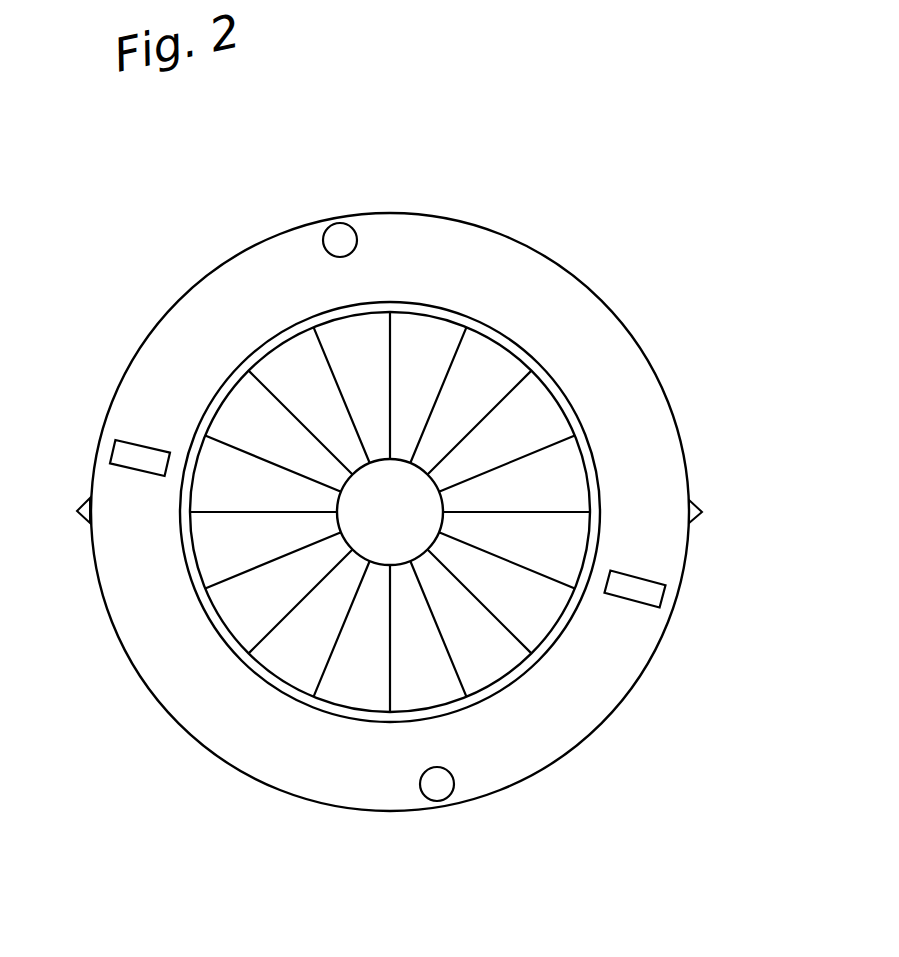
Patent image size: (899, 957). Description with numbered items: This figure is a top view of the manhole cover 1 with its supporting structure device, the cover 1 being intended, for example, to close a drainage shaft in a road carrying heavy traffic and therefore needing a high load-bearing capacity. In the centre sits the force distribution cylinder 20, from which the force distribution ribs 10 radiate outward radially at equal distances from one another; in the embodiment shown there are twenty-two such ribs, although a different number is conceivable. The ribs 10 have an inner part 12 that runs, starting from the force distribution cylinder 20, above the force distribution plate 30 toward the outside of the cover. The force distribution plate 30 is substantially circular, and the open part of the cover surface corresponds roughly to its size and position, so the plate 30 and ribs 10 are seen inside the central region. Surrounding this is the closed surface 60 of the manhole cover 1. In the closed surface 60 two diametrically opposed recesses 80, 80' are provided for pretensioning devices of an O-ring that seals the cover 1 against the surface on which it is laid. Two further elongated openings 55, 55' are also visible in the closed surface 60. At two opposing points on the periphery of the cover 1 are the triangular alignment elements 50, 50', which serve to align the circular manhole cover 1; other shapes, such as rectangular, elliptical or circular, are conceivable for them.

The manhole cover 1 is at (542, 162).
The force distribution ribs 10 is at (450, 344).
The inner part 12 is at (444, 392).
The force distribution cylinder 20 is at (363, 467).
The force distribution plate 30 is at (408, 548).
The triangular alignment element 50 is at (716, 482).
The triangular alignment element 50' is at (66, 471).
The slot 55 is at (141, 430).
The slot 55' is at (635, 553).
The closed surface 60 is at (566, 324).
The recess 80 is at (348, 207).
The recess 80' is at (455, 827).